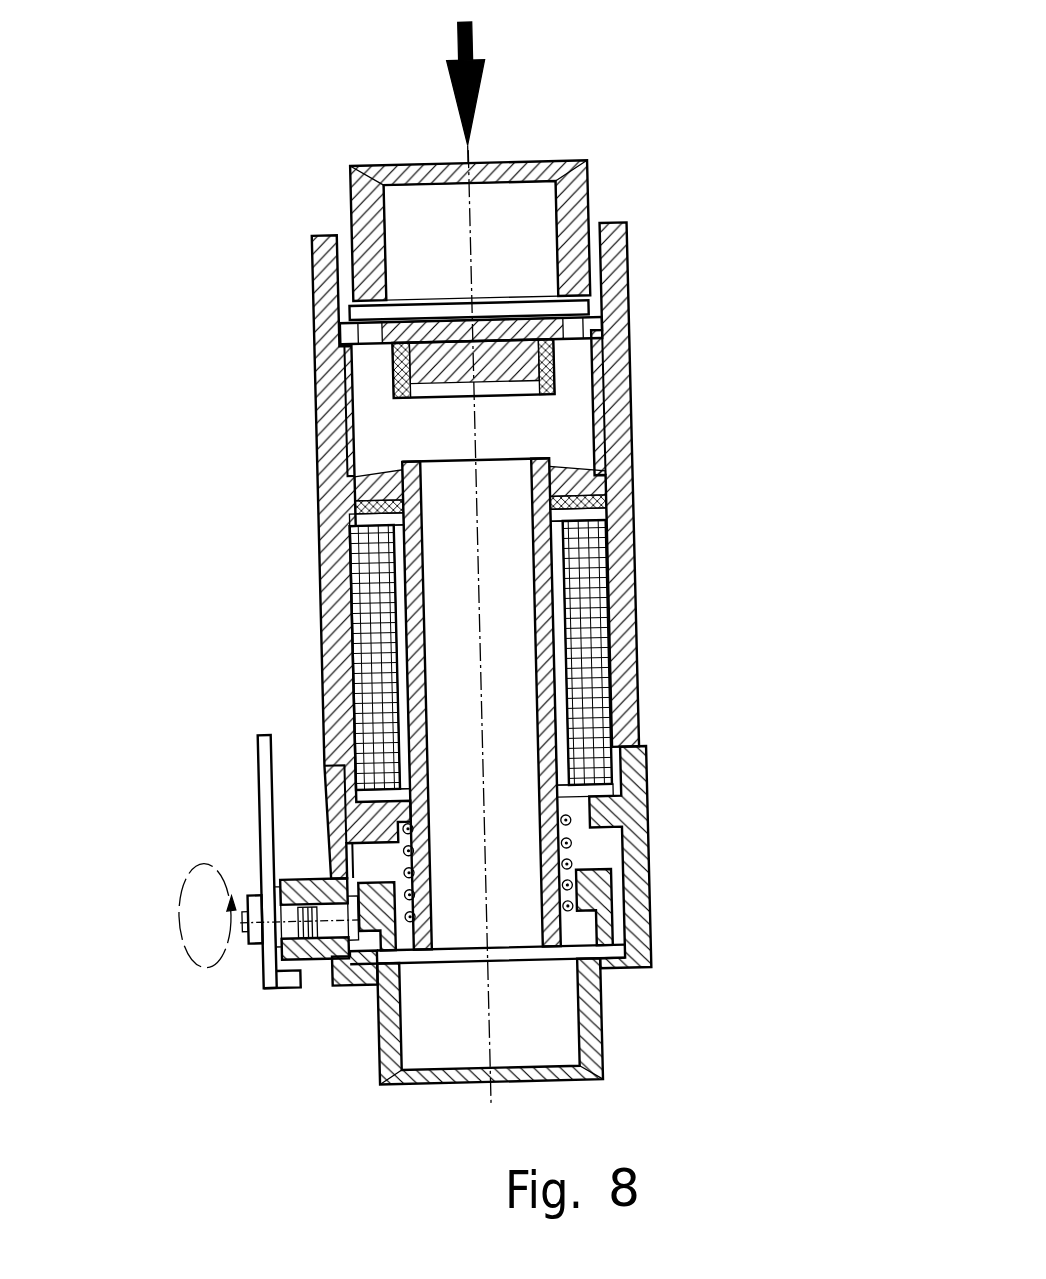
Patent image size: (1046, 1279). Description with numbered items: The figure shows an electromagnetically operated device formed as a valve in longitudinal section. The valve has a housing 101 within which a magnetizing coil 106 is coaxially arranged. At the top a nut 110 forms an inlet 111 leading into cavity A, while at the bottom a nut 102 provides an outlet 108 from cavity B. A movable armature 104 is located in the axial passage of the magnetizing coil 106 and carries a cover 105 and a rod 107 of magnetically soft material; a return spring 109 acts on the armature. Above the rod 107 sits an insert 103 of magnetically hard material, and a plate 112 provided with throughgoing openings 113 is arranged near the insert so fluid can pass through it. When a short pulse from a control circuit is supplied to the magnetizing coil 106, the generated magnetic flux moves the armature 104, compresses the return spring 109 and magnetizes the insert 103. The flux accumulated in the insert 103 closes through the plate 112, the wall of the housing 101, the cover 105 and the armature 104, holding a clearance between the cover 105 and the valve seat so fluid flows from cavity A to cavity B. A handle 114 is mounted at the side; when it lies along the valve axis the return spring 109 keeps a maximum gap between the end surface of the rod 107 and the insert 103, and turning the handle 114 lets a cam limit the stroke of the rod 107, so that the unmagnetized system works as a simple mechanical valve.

The housing 101 is at (380, 552).
The nut 102 is at (636, 868).
The insert 103 is at (336, 341).
The movable armature 104 is at (263, 660).
The cover 105 is at (566, 934).
The magnetizing coil 106 is at (585, 716).
The rod 107 is at (366, 707).
The outlet 108 is at (378, 1030).
The return spring 109 is at (638, 907).
The nut 110 is at (345, 204).
The inlet 111 is at (523, 191).
The plate 112 is at (542, 326).
The throughgoing openings 113 is at (581, 331).
The handle 114 is at (257, 848).